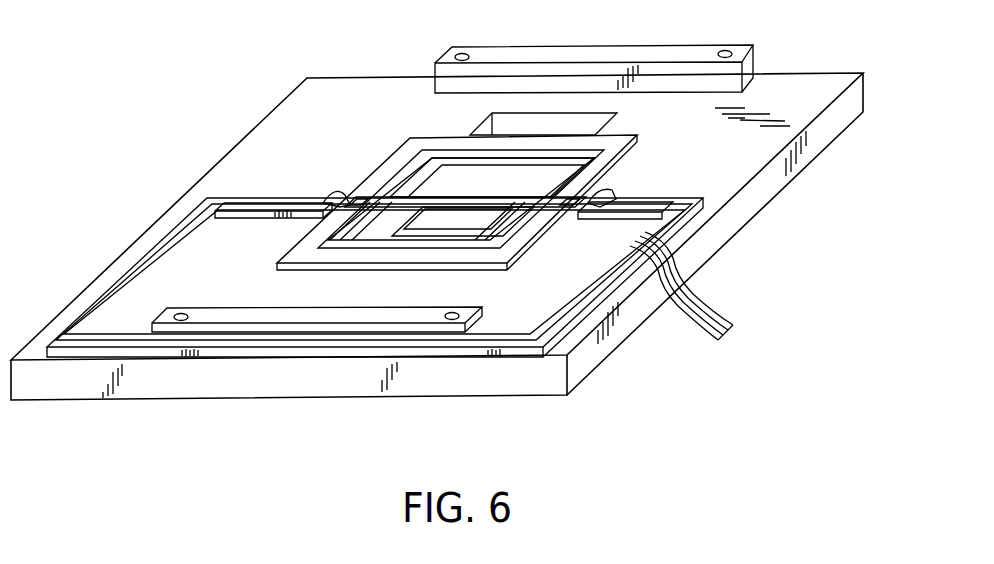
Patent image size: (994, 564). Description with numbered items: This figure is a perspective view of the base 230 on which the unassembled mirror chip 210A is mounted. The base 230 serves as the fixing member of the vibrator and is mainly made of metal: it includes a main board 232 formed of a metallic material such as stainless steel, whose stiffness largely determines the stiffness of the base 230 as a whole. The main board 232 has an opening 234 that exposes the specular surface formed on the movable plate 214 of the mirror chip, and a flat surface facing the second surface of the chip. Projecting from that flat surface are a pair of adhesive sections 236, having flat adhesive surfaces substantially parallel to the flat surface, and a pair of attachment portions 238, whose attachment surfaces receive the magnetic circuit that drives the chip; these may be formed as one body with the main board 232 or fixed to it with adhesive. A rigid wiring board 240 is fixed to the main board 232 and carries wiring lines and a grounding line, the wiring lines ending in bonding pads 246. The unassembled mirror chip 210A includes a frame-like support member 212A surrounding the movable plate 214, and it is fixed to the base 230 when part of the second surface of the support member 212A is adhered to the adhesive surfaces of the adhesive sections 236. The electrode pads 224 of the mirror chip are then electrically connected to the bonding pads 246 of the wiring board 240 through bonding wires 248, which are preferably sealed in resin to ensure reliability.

The base 230 is at (231, 138).
The main board 232 is at (717, 246).
The wiring board 240 is at (143, 258).
The attachment portions 238 is at (648, 59).
The opening 234 is at (540, 112).
The frame-like support member 212A is at (618, 138).
The unassembled mirror chip 210A is at (418, 128).
The movable plate 214 is at (466, 180).
The electrode pads 224 is at (358, 196).
The bonding wires 248 is at (335, 195).
The bonding pads 246 is at (305, 219).
The adhesive sections 236 is at (543, 250).